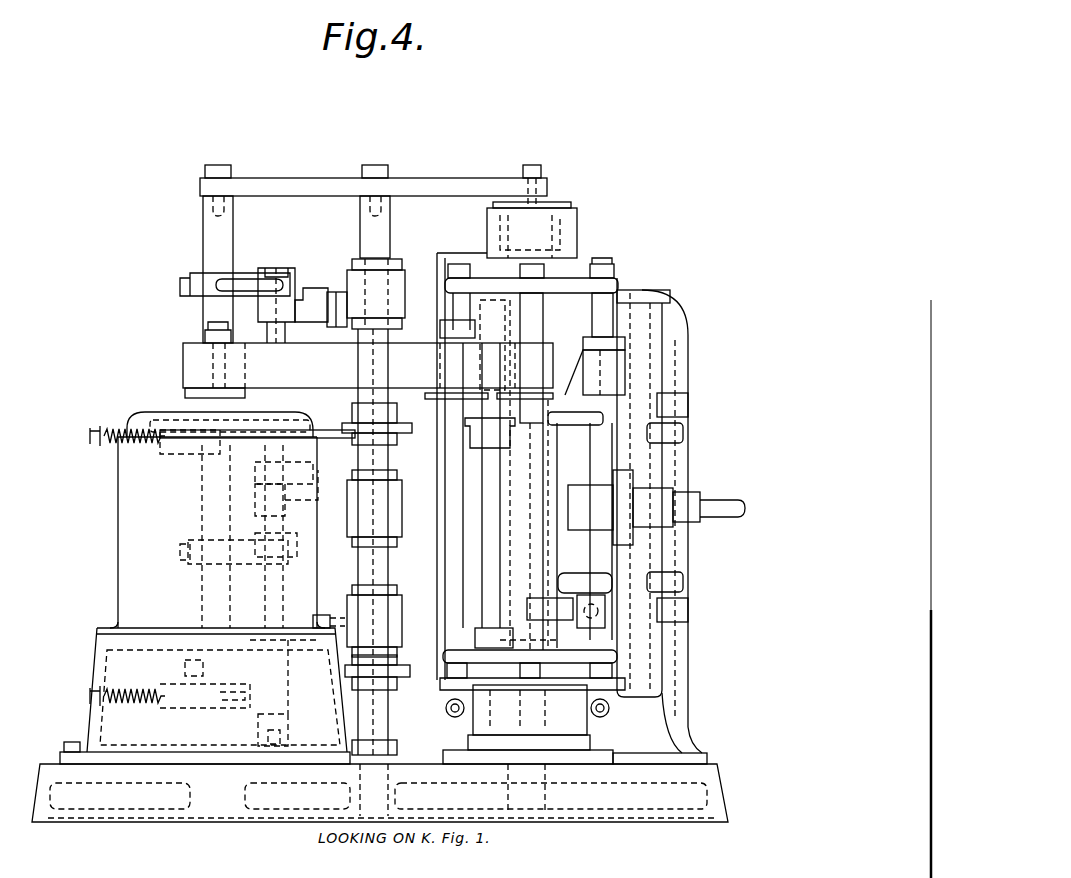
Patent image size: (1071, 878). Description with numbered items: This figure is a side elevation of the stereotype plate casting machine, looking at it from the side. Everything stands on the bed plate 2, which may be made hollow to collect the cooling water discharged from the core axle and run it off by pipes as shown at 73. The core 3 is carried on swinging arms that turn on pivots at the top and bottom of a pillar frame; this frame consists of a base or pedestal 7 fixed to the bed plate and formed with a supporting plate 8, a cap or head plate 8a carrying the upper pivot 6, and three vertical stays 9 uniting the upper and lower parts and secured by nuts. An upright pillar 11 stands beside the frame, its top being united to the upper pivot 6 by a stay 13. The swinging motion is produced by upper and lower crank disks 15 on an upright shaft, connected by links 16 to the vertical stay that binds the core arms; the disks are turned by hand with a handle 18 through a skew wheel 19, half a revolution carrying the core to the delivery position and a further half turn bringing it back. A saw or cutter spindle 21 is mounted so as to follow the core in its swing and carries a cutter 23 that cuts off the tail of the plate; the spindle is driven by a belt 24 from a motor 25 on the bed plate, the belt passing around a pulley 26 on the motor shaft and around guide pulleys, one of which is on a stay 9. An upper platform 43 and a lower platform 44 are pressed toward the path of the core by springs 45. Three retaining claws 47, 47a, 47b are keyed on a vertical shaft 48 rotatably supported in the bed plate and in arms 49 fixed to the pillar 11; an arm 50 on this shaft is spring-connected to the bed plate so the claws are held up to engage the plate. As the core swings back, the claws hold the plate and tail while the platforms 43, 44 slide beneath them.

The bed plate 2 is at (716, 767).
The core 3 is at (596, 268).
The upper pivot 6 is at (577, 235).
The base or pedestal 7 is at (582, 746).
The supporting plate 8 is at (462, 655).
The cap or head plate 8a is at (587, 287).
The vertical stays 9 is at (603, 322).
The upright pillar 11 is at (222, 229).
The stay 13 is at (470, 192).
The crank disks 15 is at (680, 440).
The links 16 is at (680, 412).
The handle 18 is at (691, 515).
The skew wheel 19 is at (625, 492).
The saw or cutter spindle 21 is at (490, 469).
The cutter 23 is at (455, 405).
The belt 24 is at (371, 542).
The motor 25 is at (217, 520).
The pulley 26 is at (192, 362).
The upper platform 43 is at (325, 428).
The lower platform 44 is at (328, 652).
The springs 45 is at (118, 430).
The retaining claw 47 is at (300, 298).
The retaining claw 47a is at (286, 480).
The retaining claw 47b is at (300, 628).
The vertical shaft 48 is at (283, 333).
The arms 49 is at (250, 280).
The arm 50 is at (284, 740).
The water outlet 73 is at (378, 796).